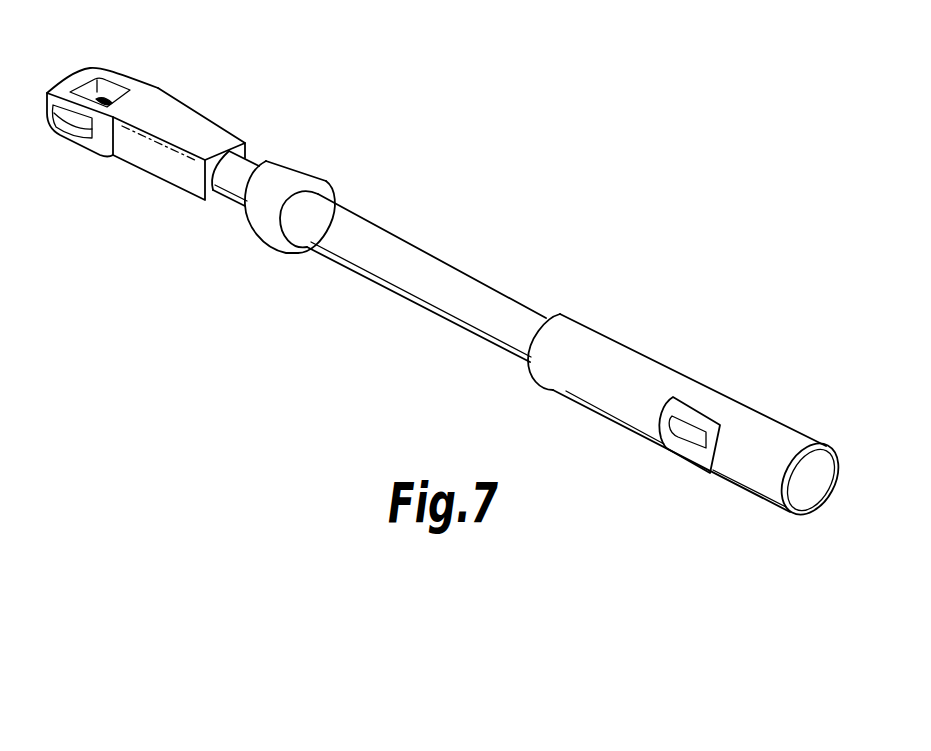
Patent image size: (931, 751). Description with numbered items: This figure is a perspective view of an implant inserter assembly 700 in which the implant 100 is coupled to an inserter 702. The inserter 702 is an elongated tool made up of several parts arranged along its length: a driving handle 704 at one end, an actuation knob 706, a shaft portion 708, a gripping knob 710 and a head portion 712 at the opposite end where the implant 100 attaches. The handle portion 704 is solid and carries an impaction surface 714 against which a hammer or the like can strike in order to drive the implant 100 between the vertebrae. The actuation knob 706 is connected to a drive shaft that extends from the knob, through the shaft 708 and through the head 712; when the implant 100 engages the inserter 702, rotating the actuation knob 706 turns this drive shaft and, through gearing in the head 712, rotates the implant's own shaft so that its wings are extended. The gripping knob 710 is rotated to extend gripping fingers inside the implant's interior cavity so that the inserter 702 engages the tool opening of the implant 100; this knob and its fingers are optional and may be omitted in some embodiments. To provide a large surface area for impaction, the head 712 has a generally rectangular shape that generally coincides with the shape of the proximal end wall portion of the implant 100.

The implant 100 is at (137, 62).
The implant inserter assembly 700 is at (478, 150).
The inserter 702 is at (590, 332).
The driving handle 704 is at (790, 433).
The actuation knob 706 is at (683, 443).
The shaft portion 708 is at (405, 241).
The gripping knob 710 is at (260, 252).
The head portion 712 is at (210, 132).
The impaction surface 714 is at (798, 499).